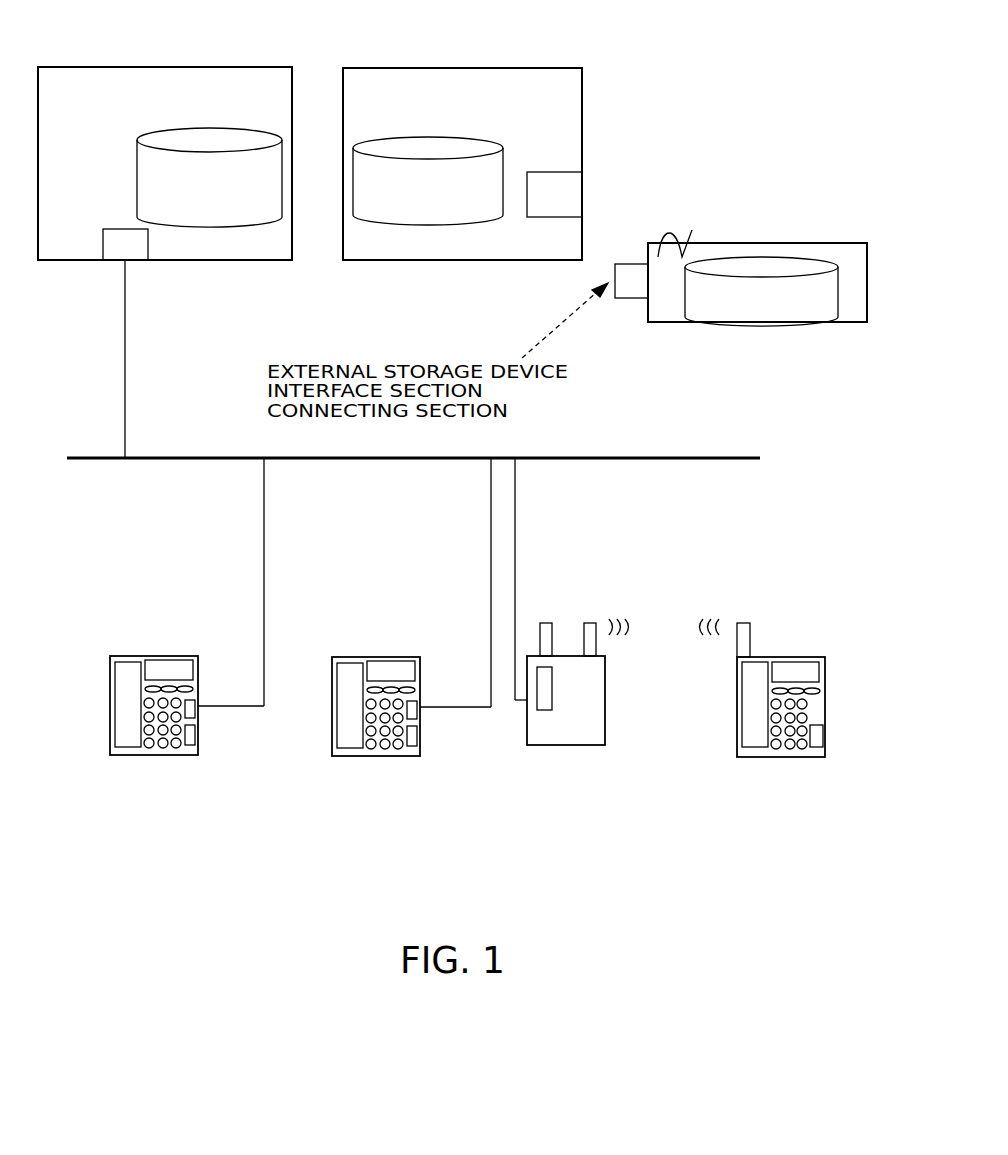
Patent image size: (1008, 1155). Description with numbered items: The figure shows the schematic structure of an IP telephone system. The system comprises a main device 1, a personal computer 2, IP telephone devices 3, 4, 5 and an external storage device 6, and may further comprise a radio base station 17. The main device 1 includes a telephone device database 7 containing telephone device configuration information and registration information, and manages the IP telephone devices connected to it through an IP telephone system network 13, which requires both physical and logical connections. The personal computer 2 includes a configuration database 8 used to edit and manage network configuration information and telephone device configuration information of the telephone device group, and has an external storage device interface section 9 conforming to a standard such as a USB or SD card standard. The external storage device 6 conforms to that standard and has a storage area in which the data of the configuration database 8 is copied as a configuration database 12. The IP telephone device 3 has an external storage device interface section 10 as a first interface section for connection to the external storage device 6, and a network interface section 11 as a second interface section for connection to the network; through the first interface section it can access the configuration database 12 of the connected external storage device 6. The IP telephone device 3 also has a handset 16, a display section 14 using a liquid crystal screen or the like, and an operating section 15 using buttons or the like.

The main device 1 is at (283, 70).
The personal computer 2 is at (572, 73).
The IP telephone device 3 is at (186, 733).
The IP telephone device 4 is at (420, 657).
The IP telephone device 5 is at (803, 657).
The external storage device 6 is at (868, 245).
The telephone device database 7 is at (265, 130).
The configuration database 8 is at (502, 148).
The external storage device interface section 9 is at (593, 193).
The external storage device interface section 10 is at (210, 754).
The network interface section 11 is at (200, 713).
The configuration database 12 is at (780, 263).
The IP telephone system network 13 is at (585, 458).
The display section 14 is at (176, 662).
The operating section 15 is at (150, 720).
The handset 16 is at (119, 690).
The radio base station 17 is at (605, 700).